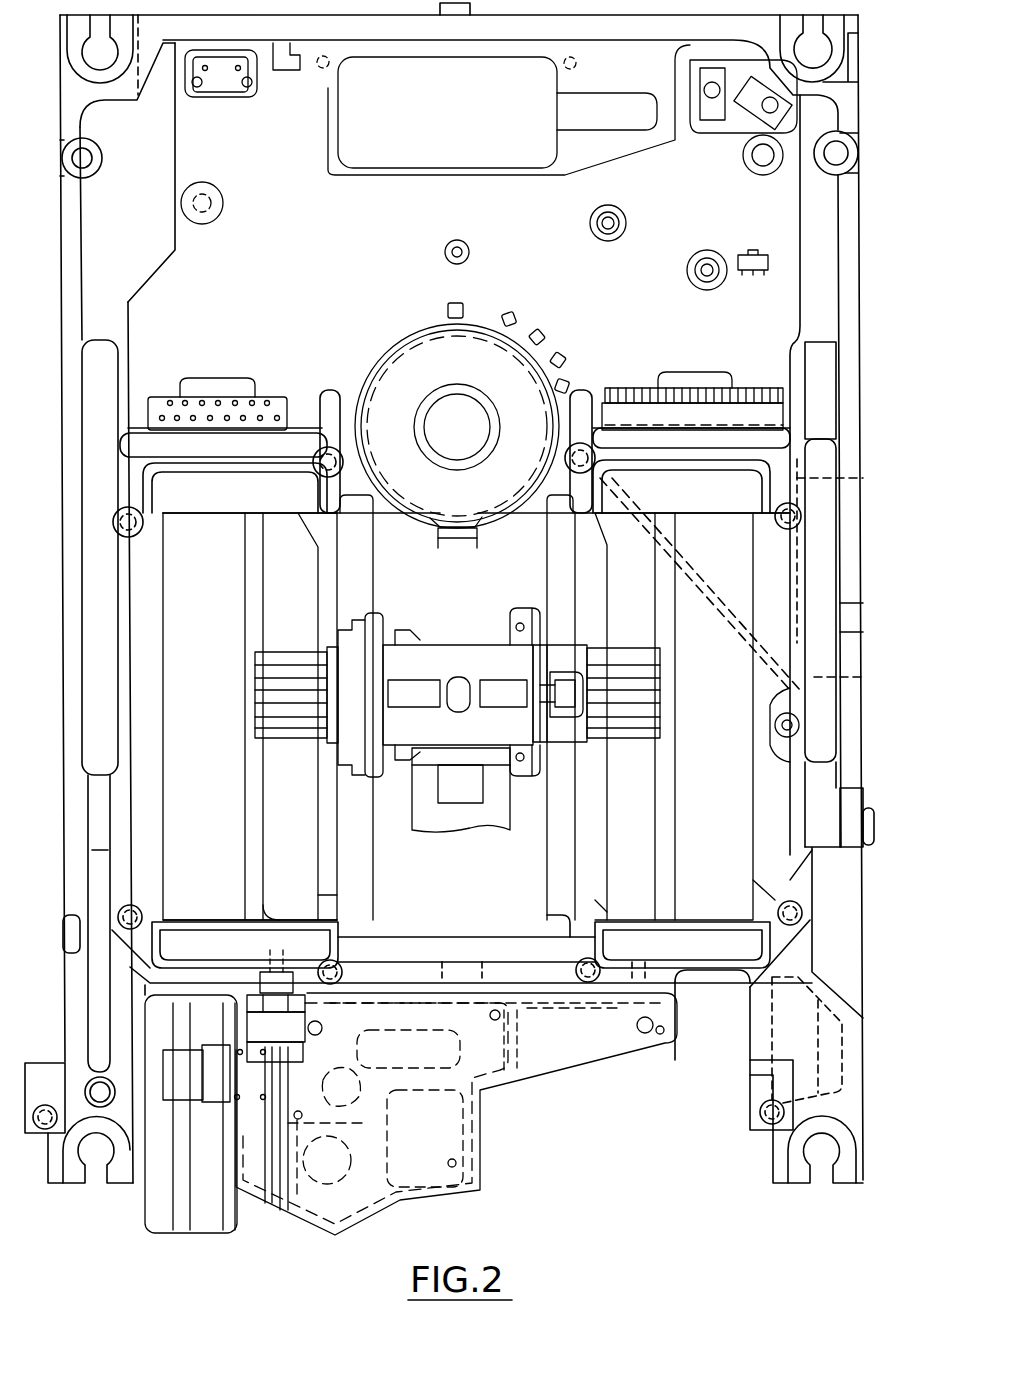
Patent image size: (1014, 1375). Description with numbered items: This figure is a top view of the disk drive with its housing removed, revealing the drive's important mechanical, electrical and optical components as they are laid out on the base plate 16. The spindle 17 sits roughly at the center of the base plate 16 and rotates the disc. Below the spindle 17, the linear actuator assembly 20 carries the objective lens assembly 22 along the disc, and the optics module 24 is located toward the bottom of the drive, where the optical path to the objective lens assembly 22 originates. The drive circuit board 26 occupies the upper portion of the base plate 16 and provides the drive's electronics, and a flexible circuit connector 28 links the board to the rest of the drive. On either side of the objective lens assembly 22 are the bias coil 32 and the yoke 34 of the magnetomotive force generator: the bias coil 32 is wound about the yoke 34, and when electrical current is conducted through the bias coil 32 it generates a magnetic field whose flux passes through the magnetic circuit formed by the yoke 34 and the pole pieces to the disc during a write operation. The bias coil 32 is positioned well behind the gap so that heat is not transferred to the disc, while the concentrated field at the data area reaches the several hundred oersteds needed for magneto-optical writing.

The base plate 16 is at (862, 937).
The spindle 17 is at (558, 380).
The linear actuator assembly 20 is at (585, 735).
The objective lens assembly 22 is at (497, 662).
The optics module 24 is at (465, 1195).
The drive circuit board 26 is at (263, 231).
The flexible circuit connector 28 is at (148, 395).
The bias coil 32 is at (292, 838).
The yoke 34 is at (355, 582).